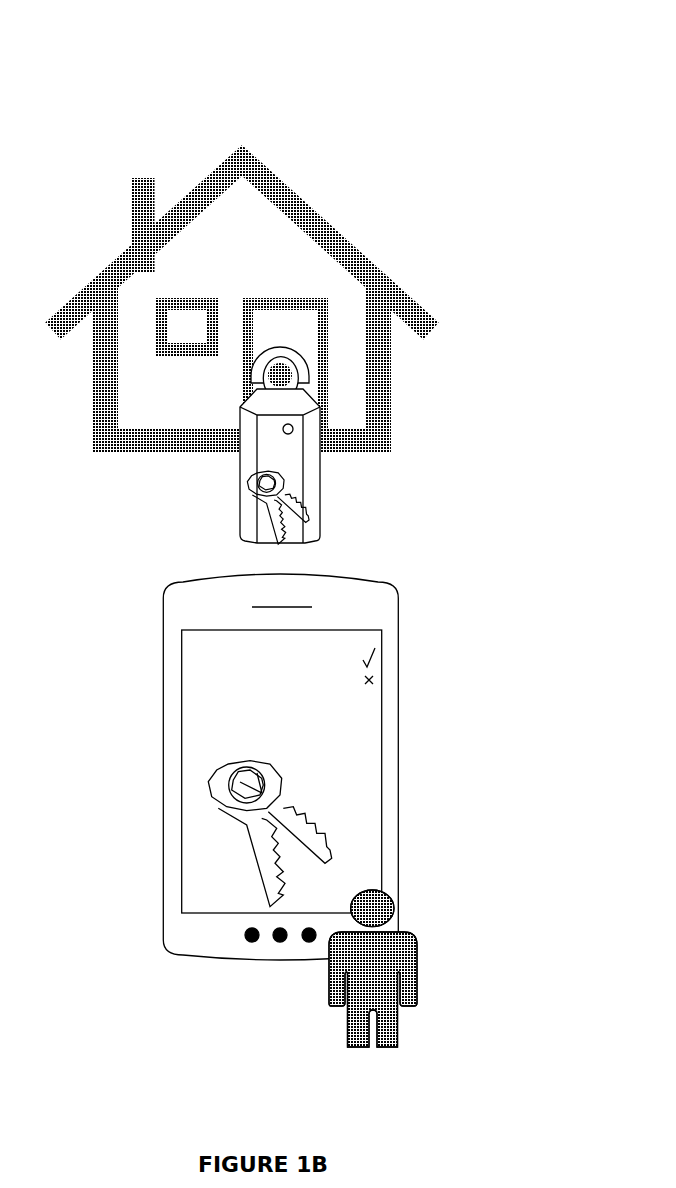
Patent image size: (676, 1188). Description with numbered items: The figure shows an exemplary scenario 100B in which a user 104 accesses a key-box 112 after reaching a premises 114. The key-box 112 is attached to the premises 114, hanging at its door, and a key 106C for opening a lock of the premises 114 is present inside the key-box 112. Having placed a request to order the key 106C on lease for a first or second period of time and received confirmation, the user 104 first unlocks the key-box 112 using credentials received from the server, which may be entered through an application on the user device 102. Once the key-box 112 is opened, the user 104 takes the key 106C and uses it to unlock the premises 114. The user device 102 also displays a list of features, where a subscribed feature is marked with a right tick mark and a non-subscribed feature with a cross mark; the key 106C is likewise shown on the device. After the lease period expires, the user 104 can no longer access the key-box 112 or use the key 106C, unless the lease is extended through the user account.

The exemplary scenario 100B is at (275, 85).
The user device 102 is at (140, 577).
The user 104 is at (400, 932).
The key 106C is at (250, 761).
The key-box 112 is at (308, 368).
The premises 114 is at (328, 222).